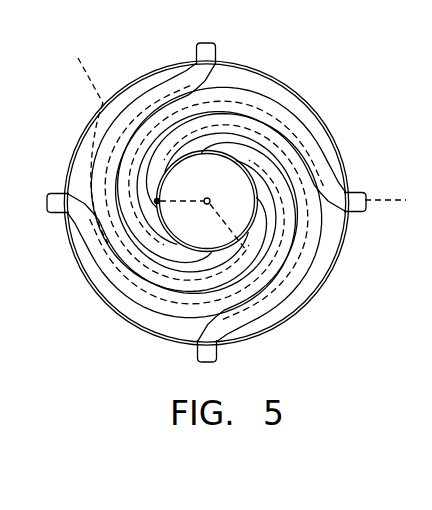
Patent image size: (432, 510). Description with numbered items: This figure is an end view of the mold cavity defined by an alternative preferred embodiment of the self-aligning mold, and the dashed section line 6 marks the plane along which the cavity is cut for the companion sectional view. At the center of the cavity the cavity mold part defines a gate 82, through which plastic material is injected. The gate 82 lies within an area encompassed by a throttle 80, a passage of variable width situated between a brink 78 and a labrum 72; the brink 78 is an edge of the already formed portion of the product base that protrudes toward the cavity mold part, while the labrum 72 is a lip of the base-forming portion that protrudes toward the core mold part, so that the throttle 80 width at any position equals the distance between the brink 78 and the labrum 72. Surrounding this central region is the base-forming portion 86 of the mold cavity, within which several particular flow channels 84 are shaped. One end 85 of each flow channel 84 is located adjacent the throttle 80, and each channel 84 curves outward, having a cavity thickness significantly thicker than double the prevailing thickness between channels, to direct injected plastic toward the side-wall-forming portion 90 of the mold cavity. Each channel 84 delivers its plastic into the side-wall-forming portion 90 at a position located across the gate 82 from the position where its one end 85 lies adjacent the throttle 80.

The section line 6- 6 is at (72, 60).
The labrum 72 is at (206, 150).
The brink 78 is at (163, 180).
The throttle 80 is at (178, 160).
The gate 82 is at (210, 199).
The flow channels 84 is at (290, 270).
The one end of flow channel 85 is at (157, 204).
The base-forming portion of the mold cavity 86 is at (276, 74).
The side-wall-forming portion of the mold cavity 90 is at (312, 292).